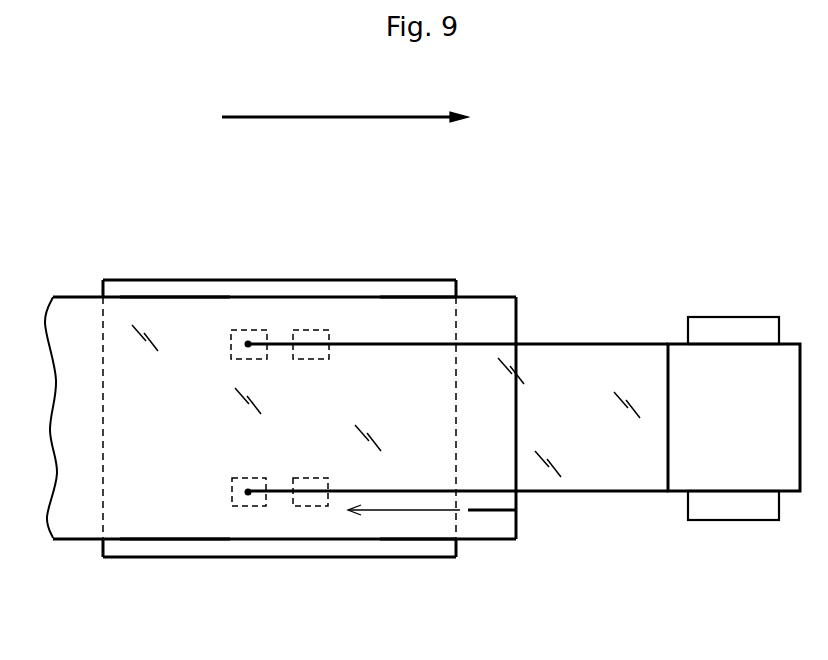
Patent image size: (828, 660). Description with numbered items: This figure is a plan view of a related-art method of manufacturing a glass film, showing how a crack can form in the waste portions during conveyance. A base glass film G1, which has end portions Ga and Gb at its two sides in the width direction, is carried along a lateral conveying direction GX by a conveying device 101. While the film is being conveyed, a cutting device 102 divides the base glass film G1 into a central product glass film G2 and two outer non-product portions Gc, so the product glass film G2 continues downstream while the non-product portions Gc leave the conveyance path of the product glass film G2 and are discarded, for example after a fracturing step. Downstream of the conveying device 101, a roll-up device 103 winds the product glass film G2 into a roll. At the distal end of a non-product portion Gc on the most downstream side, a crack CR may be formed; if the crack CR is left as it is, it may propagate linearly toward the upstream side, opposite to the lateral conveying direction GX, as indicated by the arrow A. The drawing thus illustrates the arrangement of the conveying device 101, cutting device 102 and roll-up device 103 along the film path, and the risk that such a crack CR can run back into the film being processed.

The conveying device 101 is at (341, 279).
The cutting device 102 is at (248, 329).
The roll-up device 103 is at (735, 300).
The base glass film G1 is at (82, 541).
The product glass film G2 is at (608, 493).
The end portion Ga is at (182, 541).
The end portion Gb is at (175, 296).
The non-product portion Gc is at (412, 297).
The crack CR is at (488, 512).
The arrow A is at (395, 510).
The lateral conveying direction GX is at (345, 105).